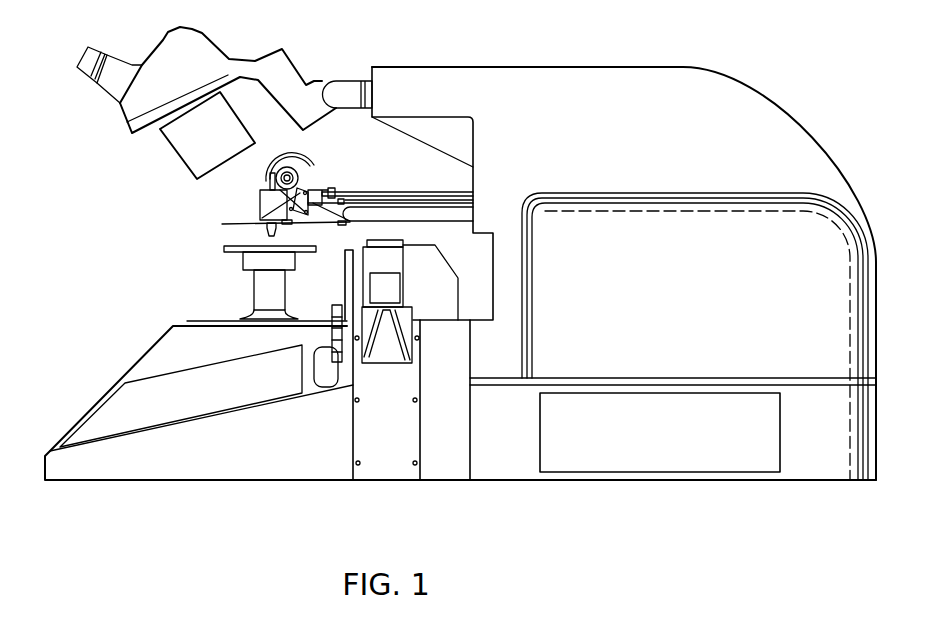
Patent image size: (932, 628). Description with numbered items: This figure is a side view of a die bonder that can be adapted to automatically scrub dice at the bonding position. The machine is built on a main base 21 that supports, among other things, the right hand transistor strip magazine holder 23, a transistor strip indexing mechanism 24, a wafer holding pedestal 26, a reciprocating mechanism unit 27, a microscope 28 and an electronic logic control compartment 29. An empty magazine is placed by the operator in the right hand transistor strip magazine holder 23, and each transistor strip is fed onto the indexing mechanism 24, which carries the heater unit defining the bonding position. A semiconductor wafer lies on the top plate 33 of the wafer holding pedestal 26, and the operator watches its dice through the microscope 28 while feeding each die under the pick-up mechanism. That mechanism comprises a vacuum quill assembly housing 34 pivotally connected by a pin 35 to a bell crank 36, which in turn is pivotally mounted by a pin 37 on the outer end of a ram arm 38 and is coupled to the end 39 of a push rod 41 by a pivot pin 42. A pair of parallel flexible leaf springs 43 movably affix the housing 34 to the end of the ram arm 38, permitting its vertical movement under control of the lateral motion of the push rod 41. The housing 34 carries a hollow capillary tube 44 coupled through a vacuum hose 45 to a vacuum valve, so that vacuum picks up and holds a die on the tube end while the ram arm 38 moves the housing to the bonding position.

The main base 21 is at (302, 480).
The right hand transistor strip magazine holder 23 is at (382, 362).
The transistor strip indexing mechanism 24 is at (435, 318).
The wafer holding pedestal 26 is at (256, 286).
The reciprocating mechanism unit 27 is at (588, 86).
The microscope 28 is at (224, 52).
The electronic logic control compartment 29 is at (782, 446).
The top plate 33 is at (228, 248).
The vacuum quill assembly housing 34 is at (260, 196).
The pin 35 is at (273, 225).
The bell crank 36 is at (263, 216).
The pin 37 is at (270, 178).
The ram arm 38 is at (437, 224).
The end of push rod 39 is at (341, 198).
The push rod 41 is at (446, 192).
The pivot pin 42 is at (328, 188).
The leaf springs 43 is at (317, 222).
The hollow capillary tube 44 is at (268, 234).
The vacuum hose 45 is at (298, 155).